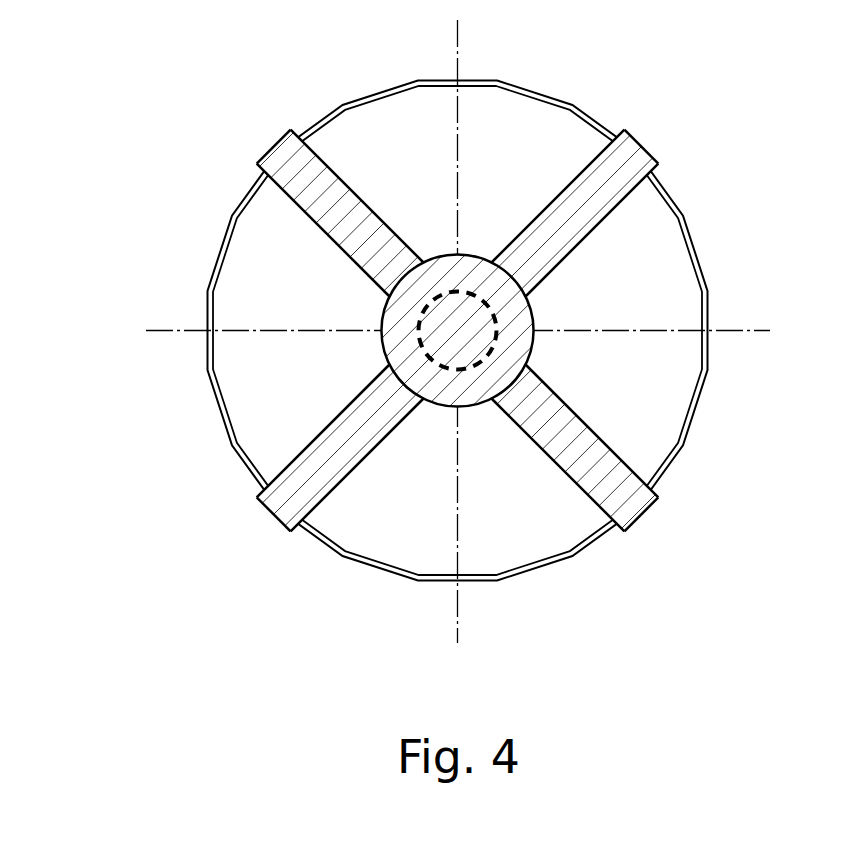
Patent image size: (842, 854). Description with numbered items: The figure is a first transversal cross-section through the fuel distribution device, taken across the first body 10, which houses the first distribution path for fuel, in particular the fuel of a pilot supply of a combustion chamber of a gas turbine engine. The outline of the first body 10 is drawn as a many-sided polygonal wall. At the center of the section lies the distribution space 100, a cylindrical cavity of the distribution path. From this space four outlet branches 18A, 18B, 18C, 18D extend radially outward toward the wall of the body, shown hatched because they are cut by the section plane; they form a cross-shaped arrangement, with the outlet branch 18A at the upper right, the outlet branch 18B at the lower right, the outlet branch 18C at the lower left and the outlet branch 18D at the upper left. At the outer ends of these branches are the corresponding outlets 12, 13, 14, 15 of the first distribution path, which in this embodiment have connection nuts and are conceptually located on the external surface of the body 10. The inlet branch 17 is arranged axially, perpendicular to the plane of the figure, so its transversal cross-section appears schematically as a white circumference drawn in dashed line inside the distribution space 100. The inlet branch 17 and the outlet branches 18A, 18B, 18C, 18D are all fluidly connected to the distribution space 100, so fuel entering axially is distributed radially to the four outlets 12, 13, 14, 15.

The first body 10 is at (522, 115).
The outlet 12 is at (652, 137).
The outlet 13 is at (645, 520).
The outlet 14 is at (268, 525).
The outlet 15 is at (270, 142).
The inlet branch 17 is at (445, 298).
The outlet branch 18A is at (583, 240).
The outlet branch 18B is at (590, 420).
The outlet branch 18C is at (318, 433).
The outlet branch 18D is at (317, 223).
The distribution space 100 is at (380, 317).